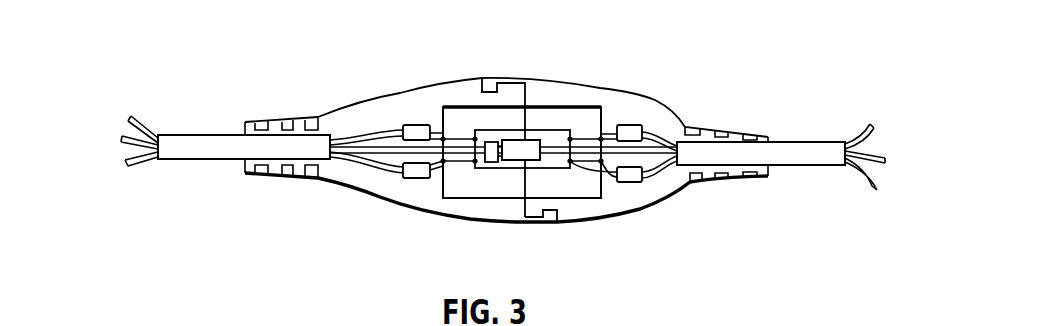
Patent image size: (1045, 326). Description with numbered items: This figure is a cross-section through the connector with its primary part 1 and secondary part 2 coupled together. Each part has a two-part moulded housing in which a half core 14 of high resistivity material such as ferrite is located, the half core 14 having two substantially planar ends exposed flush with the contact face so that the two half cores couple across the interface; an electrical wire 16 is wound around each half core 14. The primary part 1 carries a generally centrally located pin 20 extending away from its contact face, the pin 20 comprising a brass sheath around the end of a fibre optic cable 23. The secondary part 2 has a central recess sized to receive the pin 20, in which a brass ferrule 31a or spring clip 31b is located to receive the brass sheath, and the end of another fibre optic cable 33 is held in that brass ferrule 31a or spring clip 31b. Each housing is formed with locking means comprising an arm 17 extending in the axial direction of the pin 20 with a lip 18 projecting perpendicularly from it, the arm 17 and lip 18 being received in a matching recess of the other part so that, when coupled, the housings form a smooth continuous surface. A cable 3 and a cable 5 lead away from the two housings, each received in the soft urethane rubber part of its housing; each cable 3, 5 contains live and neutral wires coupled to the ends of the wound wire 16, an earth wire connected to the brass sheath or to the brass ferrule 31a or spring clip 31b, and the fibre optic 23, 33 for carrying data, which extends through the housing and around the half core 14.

The primary part 1 is at (628, 86).
The secondary part 2 is at (369, 94).
The cable 3 is at (803, 155).
The cable 5 is at (203, 148).
The half core 14 is at (563, 118).
The electrical wire 16 is at (455, 132).
The arm 17 is at (502, 78).
The lip 18 is at (558, 214).
The pin 20 is at (530, 144).
The fibre optic cable 23 is at (647, 150).
The brass ferrule 31a is at (521, 210).
The spring clip 31b is at (510, 245).
The fibre optic cable 33 is at (360, 148).